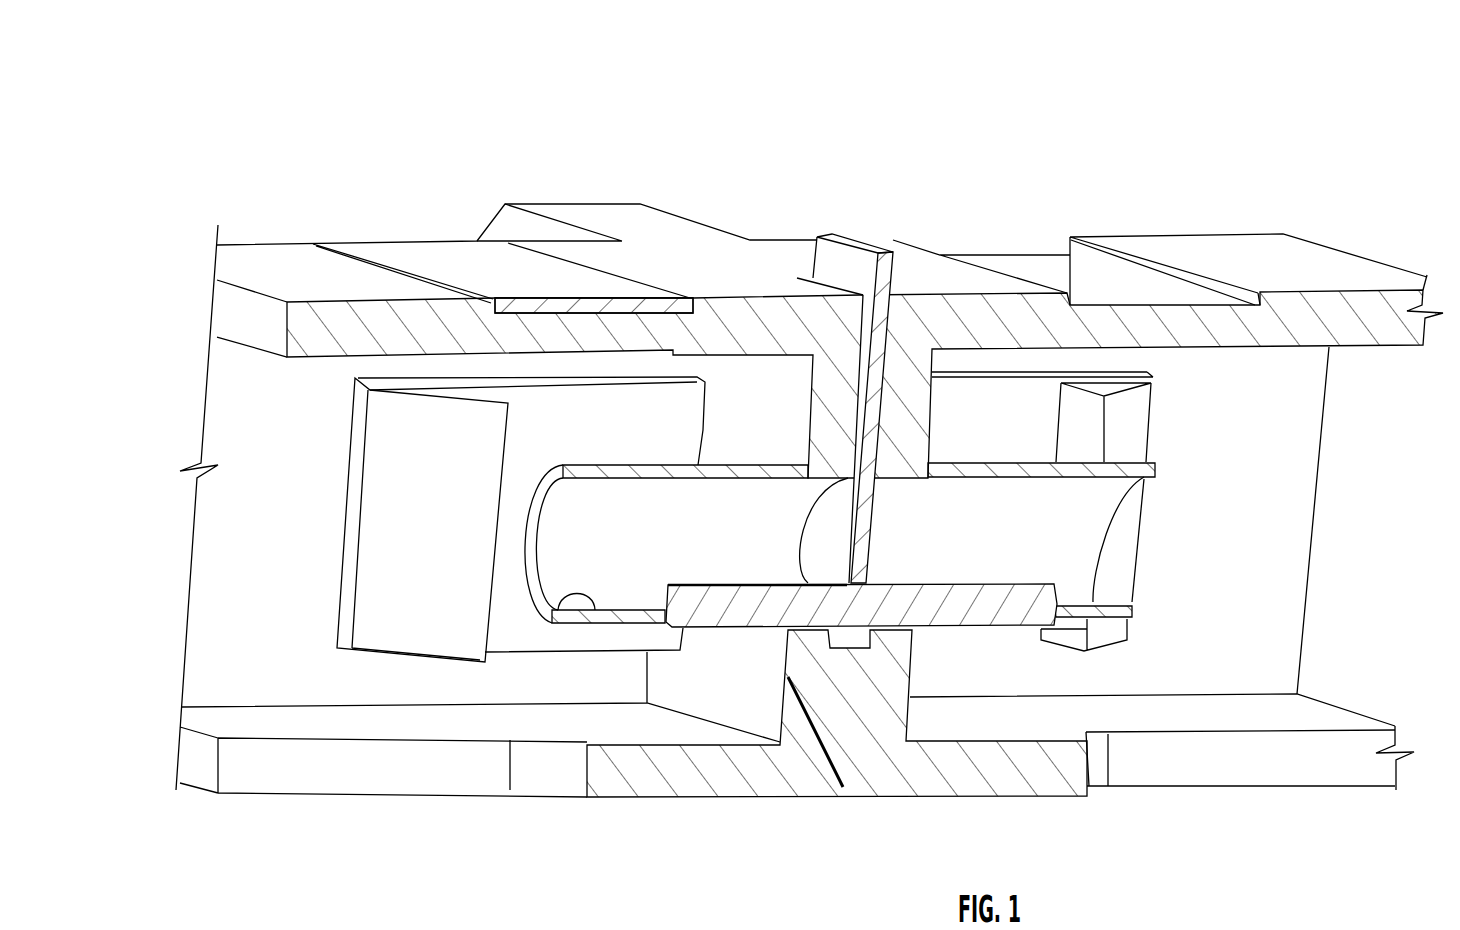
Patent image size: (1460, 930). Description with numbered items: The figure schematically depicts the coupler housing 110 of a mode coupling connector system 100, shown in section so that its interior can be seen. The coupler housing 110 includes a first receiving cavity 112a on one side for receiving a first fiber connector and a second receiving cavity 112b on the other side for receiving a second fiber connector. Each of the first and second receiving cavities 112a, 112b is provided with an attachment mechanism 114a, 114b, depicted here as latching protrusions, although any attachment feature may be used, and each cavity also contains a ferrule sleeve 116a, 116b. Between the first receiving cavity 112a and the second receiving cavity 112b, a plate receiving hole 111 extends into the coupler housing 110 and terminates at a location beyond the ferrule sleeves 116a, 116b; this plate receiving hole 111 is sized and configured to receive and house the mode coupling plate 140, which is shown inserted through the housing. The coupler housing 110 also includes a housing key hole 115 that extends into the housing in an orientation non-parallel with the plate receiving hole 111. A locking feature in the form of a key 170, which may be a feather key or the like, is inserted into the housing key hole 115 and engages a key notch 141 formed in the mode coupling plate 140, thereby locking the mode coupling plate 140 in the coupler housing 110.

The mode coupling connector system 100 is at (757, 456).
The coupler housing 110 is at (1232, 217).
The plate receiving hole 111 is at (812, 270).
The first receiving cavity 112a is at (215, 608).
The second receiving cavity 112b is at (1257, 610).
The attachment mechanism 114a is at (443, 657).
The attachment mechanism 114b is at (1095, 648).
The housing key hole 115 is at (685, 633).
The ferrule sleeve 116a is at (553, 620).
The ferrule sleeve 116b is at (1096, 604).
The mode coupling plate 140 is at (845, 265).
The key notch 141 is at (847, 585).
The key 170 is at (843, 787).